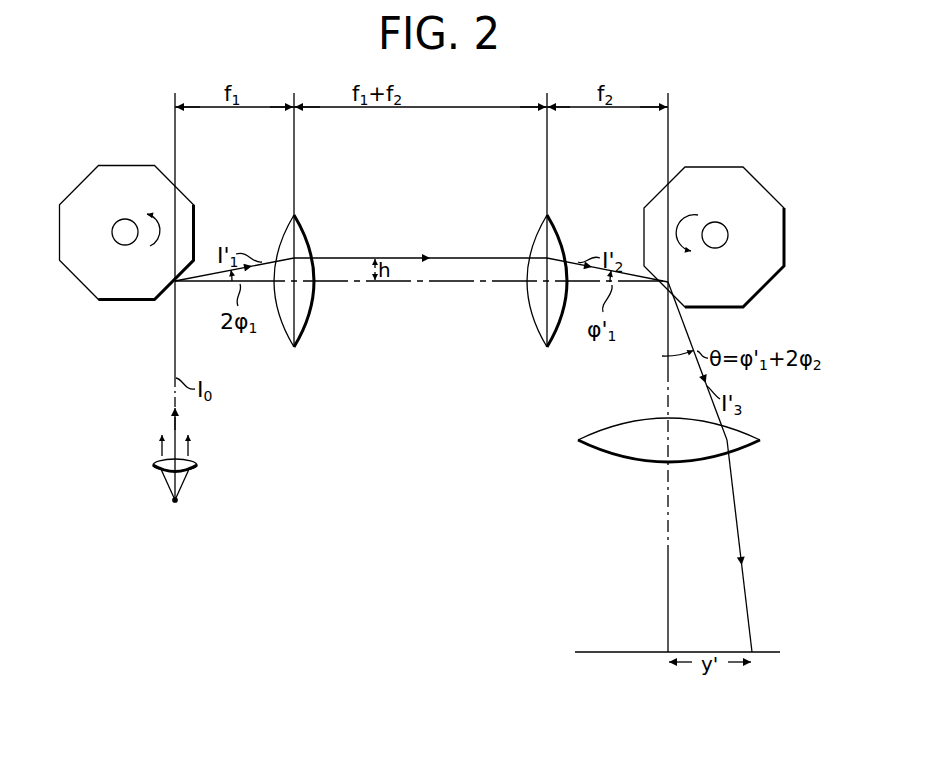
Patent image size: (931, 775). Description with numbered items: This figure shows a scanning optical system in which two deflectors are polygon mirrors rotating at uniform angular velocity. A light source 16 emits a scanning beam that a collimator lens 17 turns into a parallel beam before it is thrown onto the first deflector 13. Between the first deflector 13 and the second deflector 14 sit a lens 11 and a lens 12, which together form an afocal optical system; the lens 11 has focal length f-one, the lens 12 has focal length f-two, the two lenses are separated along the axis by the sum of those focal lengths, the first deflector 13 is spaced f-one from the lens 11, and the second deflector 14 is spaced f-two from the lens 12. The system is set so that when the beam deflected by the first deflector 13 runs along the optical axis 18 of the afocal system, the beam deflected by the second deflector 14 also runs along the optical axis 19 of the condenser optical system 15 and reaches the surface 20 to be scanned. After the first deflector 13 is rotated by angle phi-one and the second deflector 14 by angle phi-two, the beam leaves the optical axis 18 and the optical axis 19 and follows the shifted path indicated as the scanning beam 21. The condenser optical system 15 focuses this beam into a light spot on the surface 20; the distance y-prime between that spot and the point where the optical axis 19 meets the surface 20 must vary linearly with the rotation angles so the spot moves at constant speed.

The lens 11 is at (294, 349).
The lens 12 is at (547, 350).
The first deflector 13 is at (78, 289).
The second deflector 14 is at (760, 186).
The condenser optical system 15 is at (760, 440).
The light source 16 is at (177, 500).
The collimator lens 17 is at (197, 465).
The optical axis 18 is at (403, 284).
The optical axis 19 is at (668, 530).
The surface to be scanned 20 is at (752, 650).
The scanning beam 21 is at (336, 258).